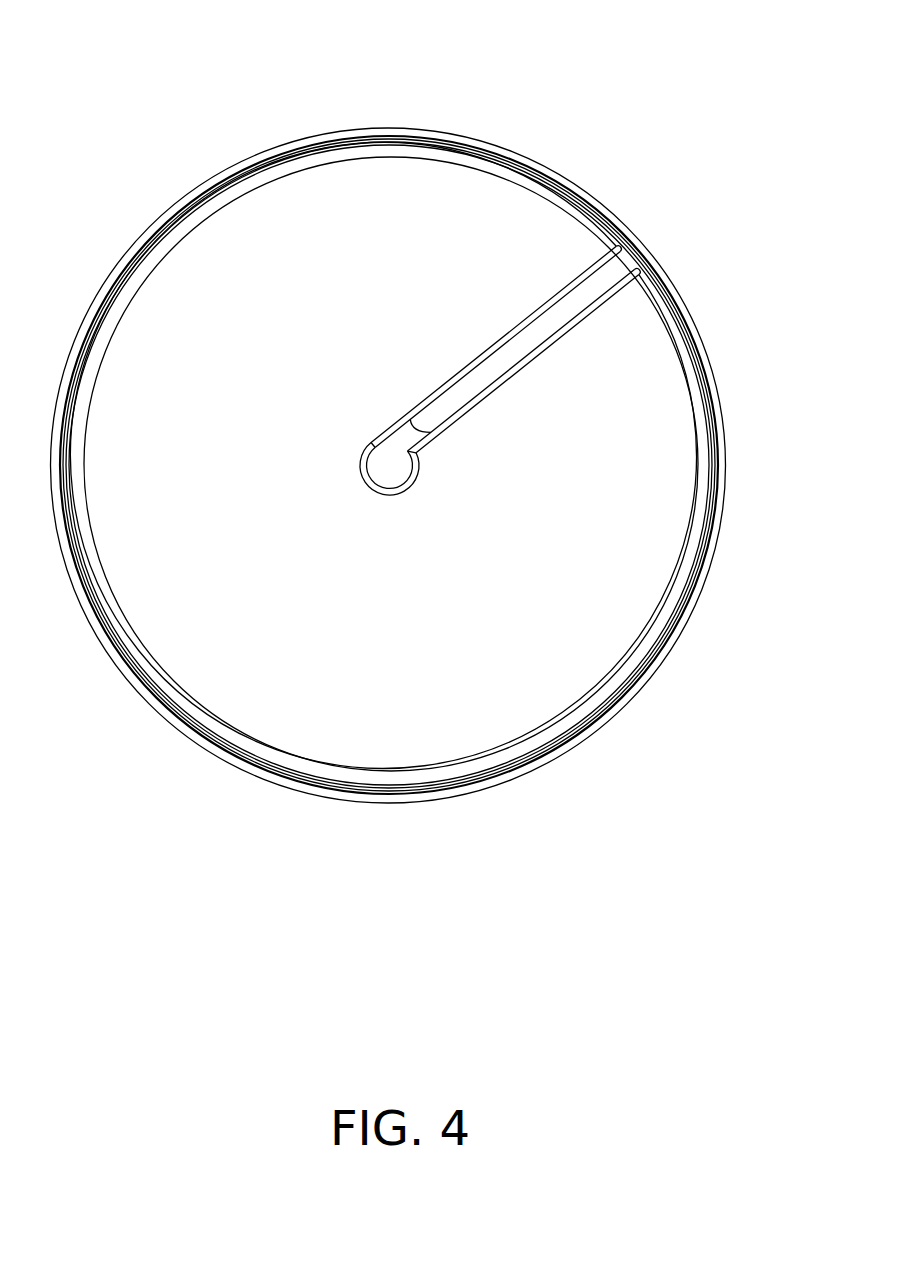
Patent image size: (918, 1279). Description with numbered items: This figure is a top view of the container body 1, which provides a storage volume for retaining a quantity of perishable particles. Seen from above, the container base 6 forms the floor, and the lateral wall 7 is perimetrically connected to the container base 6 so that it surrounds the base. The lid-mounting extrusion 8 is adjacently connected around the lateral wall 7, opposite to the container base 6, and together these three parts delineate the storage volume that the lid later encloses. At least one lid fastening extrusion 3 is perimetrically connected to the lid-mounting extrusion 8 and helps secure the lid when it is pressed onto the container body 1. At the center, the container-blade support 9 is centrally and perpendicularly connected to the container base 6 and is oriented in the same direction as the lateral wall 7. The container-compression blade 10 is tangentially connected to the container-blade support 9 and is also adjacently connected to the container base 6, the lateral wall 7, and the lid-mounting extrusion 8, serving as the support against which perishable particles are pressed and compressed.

The container body 1 is at (137, 37).
The lid fastening extrusion 3 is at (517, 168).
The container base 6 is at (653, 532).
The lateral wall 7 is at (595, 200).
The lid-mounting extrusion 8 is at (482, 157).
The container-blade support 9 is at (372, 467).
The container-compression blade 10 is at (525, 342).